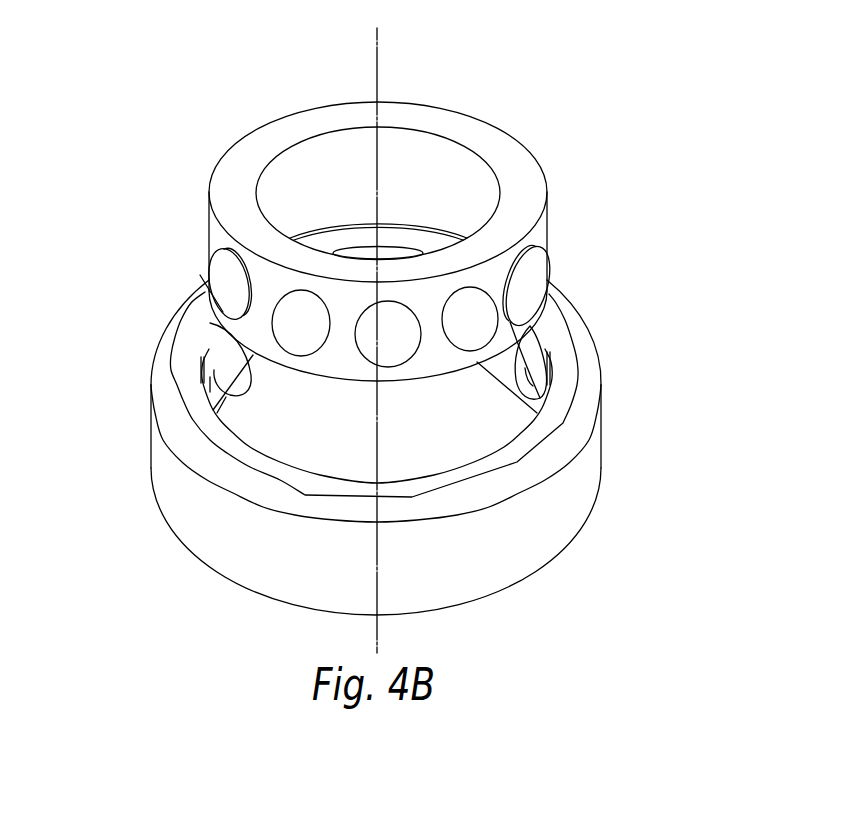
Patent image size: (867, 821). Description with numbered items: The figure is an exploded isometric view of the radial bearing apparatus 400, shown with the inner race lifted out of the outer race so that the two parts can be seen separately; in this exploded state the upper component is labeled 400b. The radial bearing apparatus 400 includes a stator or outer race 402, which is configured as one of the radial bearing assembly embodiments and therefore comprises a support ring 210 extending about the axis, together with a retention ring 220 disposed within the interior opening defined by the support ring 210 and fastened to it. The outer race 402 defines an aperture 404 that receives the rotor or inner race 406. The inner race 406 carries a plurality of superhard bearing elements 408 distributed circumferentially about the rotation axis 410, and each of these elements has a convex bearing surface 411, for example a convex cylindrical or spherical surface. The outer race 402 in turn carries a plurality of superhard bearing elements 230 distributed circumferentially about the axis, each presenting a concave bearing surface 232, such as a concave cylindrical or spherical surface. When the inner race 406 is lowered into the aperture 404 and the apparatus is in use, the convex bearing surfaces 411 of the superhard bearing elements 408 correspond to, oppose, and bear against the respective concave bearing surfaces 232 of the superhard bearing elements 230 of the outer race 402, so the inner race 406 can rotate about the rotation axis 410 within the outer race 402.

The radial bearing apparatus 400 is at (657, 32).
The cap 400b is at (486, 98).
The outer race 402 is at (636, 306).
The aperture 404 is at (474, 442).
The inner race 406 is at (519, 205).
The superhard bearing elements 408 is at (212, 255).
The rotation axis 410 is at (377, 71).
The convex bearing surfaces 411 is at (225, 279).
The support ring 210 is at (150, 457).
The retention ring 220 is at (196, 403).
The superhard bearing elements 230 is at (548, 356).
The concave bearing surfaces 232 is at (537, 416).